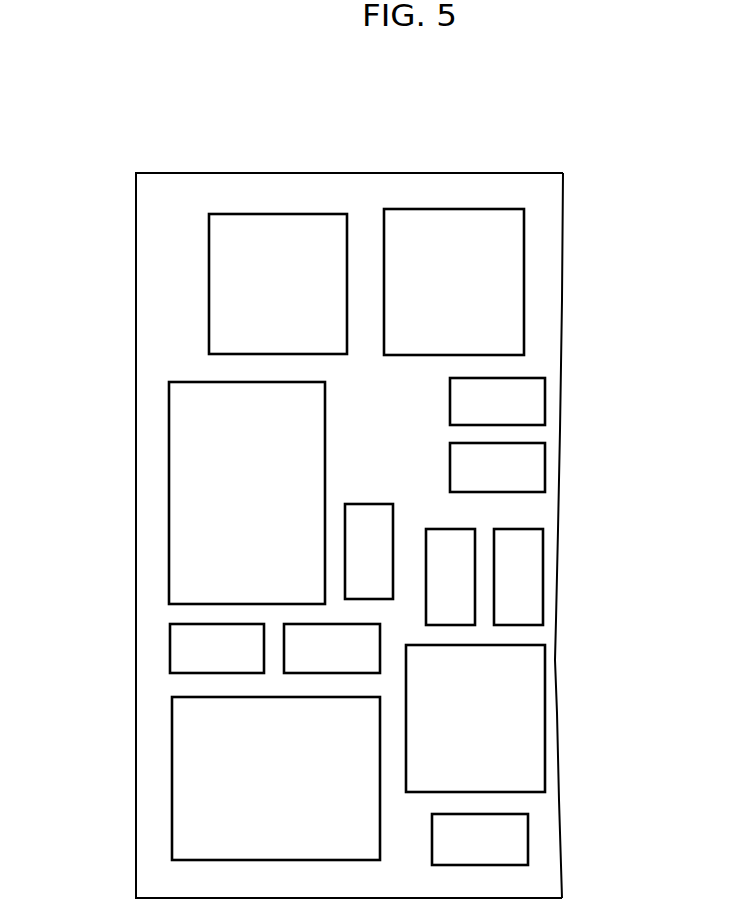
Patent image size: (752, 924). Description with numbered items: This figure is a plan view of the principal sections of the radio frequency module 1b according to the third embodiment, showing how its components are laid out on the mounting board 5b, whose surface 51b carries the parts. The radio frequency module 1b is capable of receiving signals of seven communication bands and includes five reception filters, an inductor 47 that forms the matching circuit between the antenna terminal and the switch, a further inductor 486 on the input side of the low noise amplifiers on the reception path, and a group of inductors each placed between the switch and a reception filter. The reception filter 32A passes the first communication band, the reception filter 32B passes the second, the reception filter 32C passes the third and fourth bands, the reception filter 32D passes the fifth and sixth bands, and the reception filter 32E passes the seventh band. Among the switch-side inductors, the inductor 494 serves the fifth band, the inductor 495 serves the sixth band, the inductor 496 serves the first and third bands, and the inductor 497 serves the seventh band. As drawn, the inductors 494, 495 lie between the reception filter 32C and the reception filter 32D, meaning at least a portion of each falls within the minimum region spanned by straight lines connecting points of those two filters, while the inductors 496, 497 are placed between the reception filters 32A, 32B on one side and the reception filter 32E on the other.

The radio frequency module 1b is at (158, 158).
The mounting board 5b is at (130, 198).
The substrate surface 51b is at (141, 232).
The reception filter 32A is at (223, 309).
The reception filter 32B is at (413, 340).
The reception filter 32C is at (185, 440).
The reception filter 32D is at (180, 786).
The reception filter 32E is at (528, 713).
The inductor 47 is at (436, 536).
The inductor 494 is at (183, 643).
The inductor 495 is at (325, 662).
The inductor 496 is at (533, 461).
The inductor 497 is at (530, 558).
The electronic component 486 is at (515, 838).